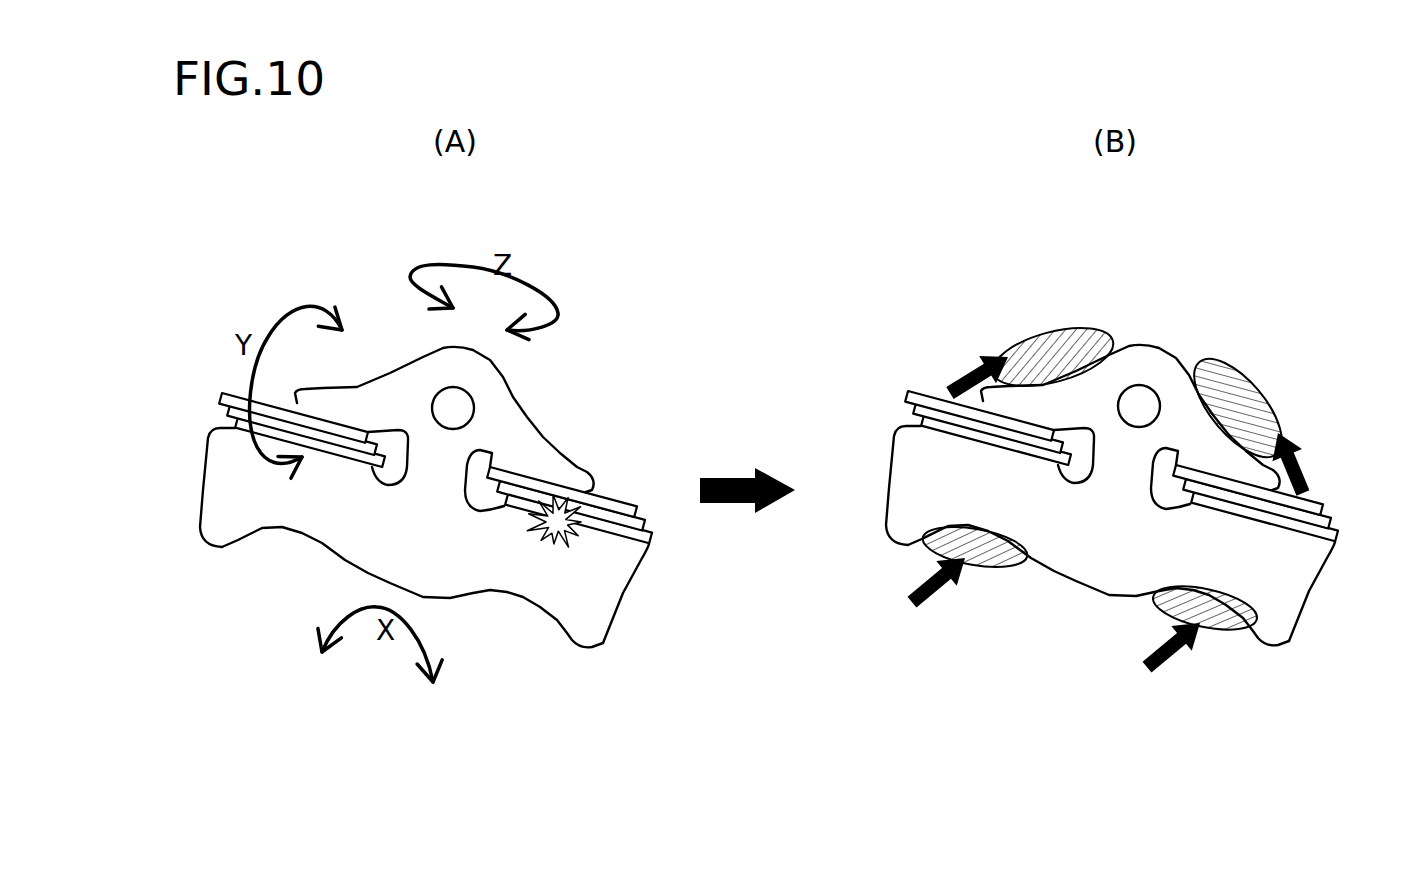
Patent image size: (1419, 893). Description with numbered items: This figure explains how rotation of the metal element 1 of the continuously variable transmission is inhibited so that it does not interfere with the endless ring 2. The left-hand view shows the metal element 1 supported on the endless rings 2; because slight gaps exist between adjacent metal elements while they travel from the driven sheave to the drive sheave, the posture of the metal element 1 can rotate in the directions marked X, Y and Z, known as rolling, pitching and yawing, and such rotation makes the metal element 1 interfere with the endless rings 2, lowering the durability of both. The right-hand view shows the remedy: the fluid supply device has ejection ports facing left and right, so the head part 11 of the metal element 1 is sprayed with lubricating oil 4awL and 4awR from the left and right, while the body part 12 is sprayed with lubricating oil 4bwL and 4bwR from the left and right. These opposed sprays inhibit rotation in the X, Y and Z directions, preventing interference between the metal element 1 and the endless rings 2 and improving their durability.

The metal element 1 is at (786, 485).
The endless ring 2 is at (607, 500).
The head part 11 is at (1160, 345).
The body part 12 is at (1089, 581).
The fluid (lubricating oil) 4awL is at (1011, 362).
The fluid (lubricating oil) 4awR is at (1281, 422).
The fluid (lubricating oil) 4bwL is at (943, 567).
The fluid (lubricating oil) 4bwR is at (1199, 635).